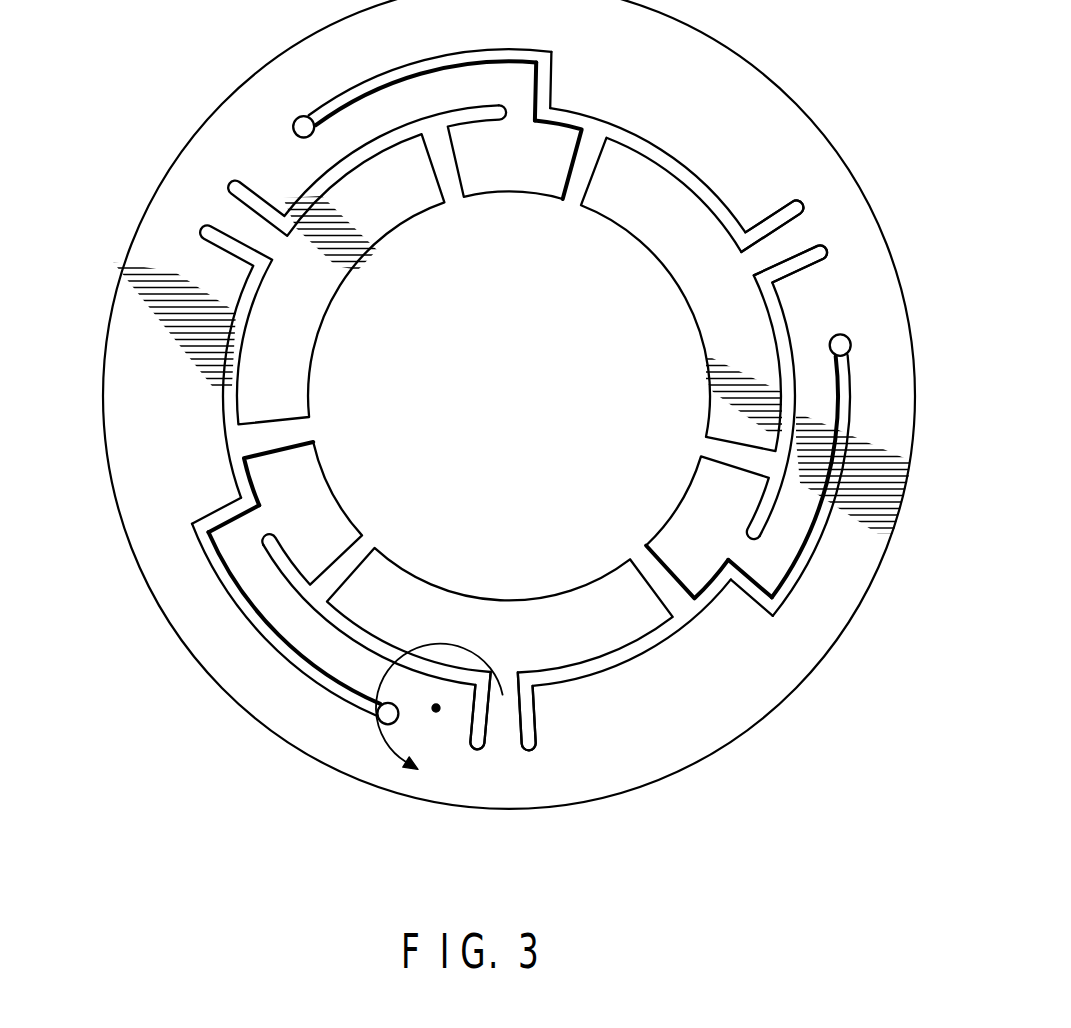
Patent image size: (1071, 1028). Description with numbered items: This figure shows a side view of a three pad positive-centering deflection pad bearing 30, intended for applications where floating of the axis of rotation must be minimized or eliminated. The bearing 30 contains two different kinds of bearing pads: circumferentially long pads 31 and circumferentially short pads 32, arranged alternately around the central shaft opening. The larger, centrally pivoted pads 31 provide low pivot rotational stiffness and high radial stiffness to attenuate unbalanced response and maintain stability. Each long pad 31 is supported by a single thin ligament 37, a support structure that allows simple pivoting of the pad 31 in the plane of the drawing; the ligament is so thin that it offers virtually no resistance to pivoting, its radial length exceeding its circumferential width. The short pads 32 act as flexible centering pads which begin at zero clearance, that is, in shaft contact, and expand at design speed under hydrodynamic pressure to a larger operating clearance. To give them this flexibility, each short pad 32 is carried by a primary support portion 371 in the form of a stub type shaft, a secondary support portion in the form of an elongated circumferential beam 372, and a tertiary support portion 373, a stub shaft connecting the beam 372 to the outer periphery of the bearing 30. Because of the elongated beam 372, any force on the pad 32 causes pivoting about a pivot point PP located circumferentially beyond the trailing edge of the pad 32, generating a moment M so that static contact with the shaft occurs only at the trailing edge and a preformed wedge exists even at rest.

The bearing 30 is at (765, 92).
The circumferentially long pads 31 is at (293, 368).
The circumferentially short pads 32 is at (500, 153).
The ligament 37 is at (780, 224).
The primary support portion 371 is at (257, 527).
The elongated circumferential beam 372 is at (320, 647).
The tertiary support portion 373 is at (457, 725).
The moment M is at (378, 755).
The pivot point PP is at (437, 712).